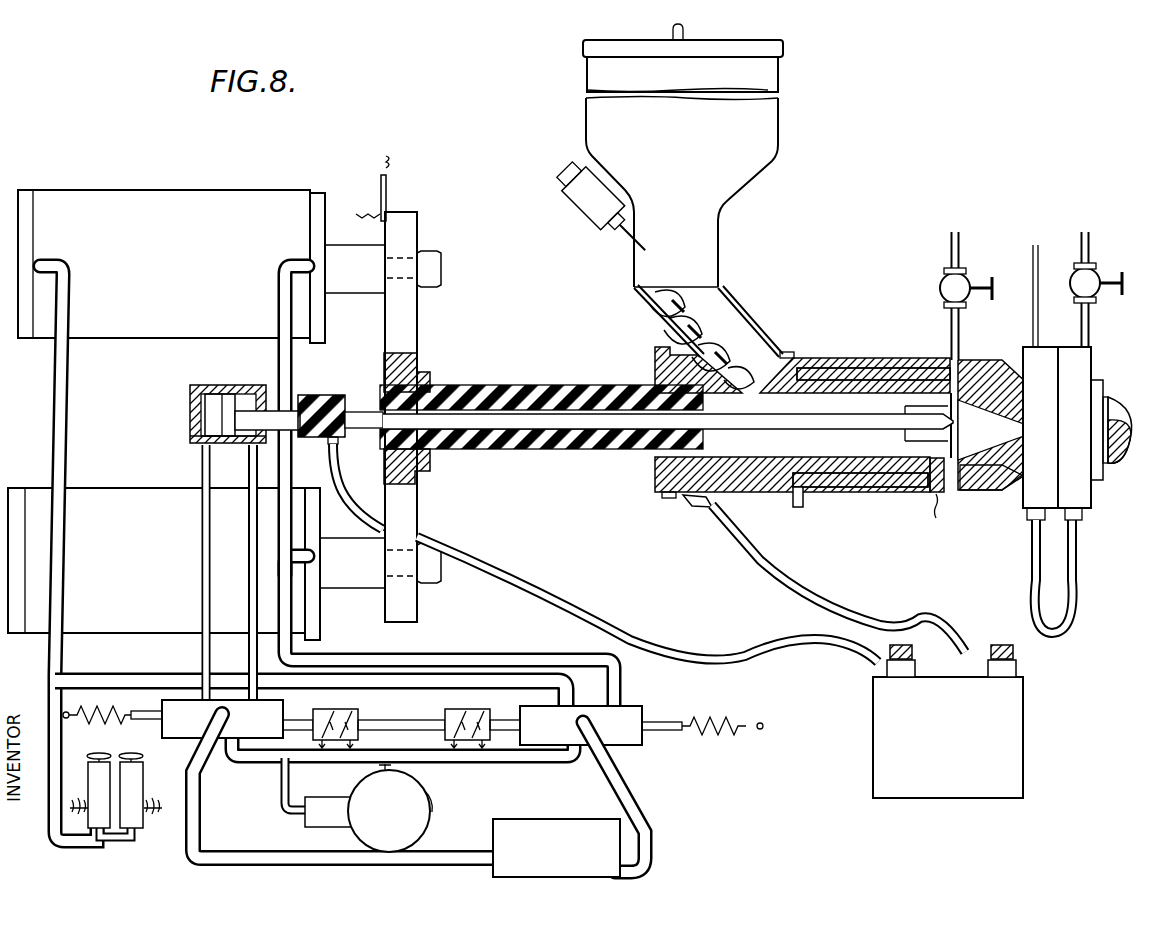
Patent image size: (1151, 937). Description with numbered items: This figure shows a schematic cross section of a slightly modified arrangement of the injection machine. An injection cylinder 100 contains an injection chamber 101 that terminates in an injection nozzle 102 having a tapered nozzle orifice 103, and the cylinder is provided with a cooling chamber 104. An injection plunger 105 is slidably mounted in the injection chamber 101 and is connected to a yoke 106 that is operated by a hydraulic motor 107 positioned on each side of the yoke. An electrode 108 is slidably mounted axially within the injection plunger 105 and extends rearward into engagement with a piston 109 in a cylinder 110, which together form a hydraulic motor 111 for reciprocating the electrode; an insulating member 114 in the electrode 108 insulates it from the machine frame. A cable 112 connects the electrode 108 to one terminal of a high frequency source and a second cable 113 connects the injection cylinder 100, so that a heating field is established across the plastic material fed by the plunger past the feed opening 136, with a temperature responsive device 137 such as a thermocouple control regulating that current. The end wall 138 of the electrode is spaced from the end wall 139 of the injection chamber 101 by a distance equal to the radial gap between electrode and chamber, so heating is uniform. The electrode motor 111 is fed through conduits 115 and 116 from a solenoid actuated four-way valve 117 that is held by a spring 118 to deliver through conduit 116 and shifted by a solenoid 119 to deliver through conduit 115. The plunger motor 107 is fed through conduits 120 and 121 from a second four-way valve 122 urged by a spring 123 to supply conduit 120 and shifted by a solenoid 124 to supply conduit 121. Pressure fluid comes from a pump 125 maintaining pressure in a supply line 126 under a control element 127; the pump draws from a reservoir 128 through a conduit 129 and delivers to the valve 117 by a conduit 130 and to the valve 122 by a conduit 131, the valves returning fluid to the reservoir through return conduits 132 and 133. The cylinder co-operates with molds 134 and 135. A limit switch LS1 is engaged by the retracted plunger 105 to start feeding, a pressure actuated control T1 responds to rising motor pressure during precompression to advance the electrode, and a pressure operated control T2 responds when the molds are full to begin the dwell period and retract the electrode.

The injection cylinder 100 is at (858, 369).
The injection chamber 101 is at (915, 395).
The injection nozzle 102 is at (999, 388).
The tapered nozzle orifice 103 is at (1003, 470).
The cooling chamber 104 is at (860, 484).
The injection plunger 105 is at (574, 455).
The yoke 106 is at (424, 380).
The hydraulic motor 107 is at (190, 290).
The electrode 108 is at (522, 418).
The piston 109 is at (222, 402).
The cylinder 110 is at (196, 412).
The hydraulic motor 111 is at (194, 440).
The cable 112 is at (488, 590).
The second cable 113 is at (755, 556).
The insulating member 114 is at (330, 390).
The fluid conducting conduit 115 is at (249, 572).
The fluid conducting conduit 116 is at (200, 618).
The solenoid actuated 4-way valve 117 is at (200, 734).
The spring 118 is at (118, 710).
The solenoid 119 is at (350, 722).
The fluid conducting conduit 120 is at (523, 664).
The fluid conducting conduit 121 is at (447, 673).
The solenoid actuated 4-way valve 122 is at (626, 712).
The spring 123 is at (727, 722).
The solenoid 124 is at (446, 728).
The pump 125 is at (422, 812).
The supply line 126 is at (389, 808).
The control element 127 is at (318, 815).
The reservoir 128 is at (575, 860).
The conduit 129 is at (466, 858).
The conduit 130 is at (258, 766).
The conduit 131 is at (571, 766).
The return conduit 132 is at (188, 778).
The return conduit 133 is at (632, 806).
The mold 134 is at (1024, 508).
The mold 135 is at (1078, 508).
The feed opening 136 is at (766, 398).
The temperature responsive device 137 is at (937, 508).
The end wall 138 is at (946, 437).
The end wall 139 is at (948, 412).
The limit switch LS1 is at (380, 189).
The pressure actuated control T1 is at (85, 770).
The pressure operated control T2 is at (134, 792).